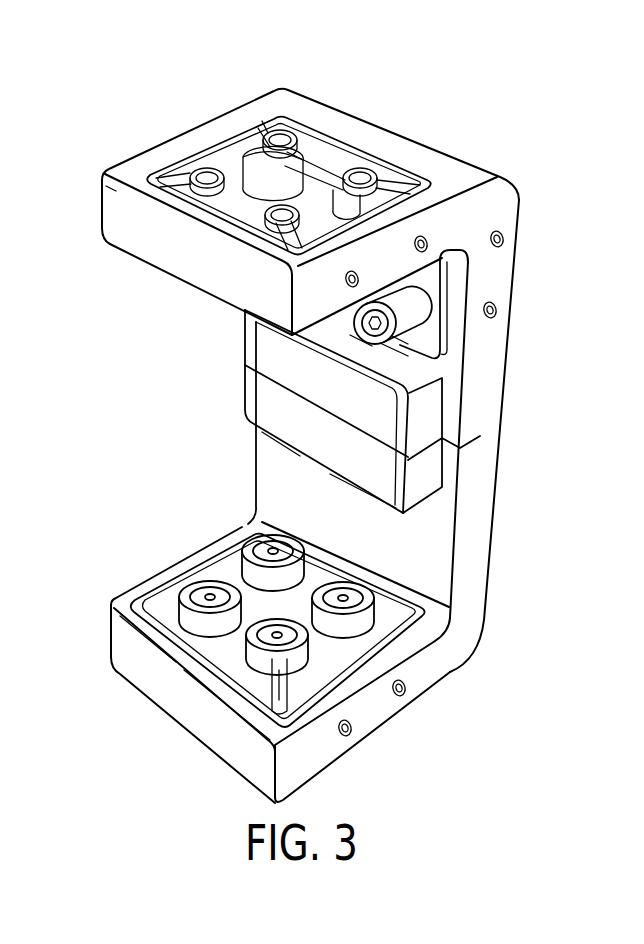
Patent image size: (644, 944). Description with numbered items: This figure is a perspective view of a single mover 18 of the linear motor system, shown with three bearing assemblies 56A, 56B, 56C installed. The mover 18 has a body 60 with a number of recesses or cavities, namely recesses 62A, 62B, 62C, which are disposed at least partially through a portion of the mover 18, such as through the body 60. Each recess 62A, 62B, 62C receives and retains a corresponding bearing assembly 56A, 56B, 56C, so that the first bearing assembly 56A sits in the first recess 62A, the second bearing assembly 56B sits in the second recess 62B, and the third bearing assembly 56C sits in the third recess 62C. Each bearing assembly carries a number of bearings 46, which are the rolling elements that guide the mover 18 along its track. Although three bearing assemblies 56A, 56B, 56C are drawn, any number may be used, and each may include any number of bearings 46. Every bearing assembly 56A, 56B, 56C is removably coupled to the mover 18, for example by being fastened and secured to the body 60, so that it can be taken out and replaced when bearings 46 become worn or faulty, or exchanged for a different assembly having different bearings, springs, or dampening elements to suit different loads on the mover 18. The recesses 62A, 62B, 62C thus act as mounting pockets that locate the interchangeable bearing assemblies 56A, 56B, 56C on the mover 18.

The mover 18 is at (392, 111).
The bearings 46 is at (182, 597).
The bearing assembly 56A is at (202, 143).
The bearing assembly 56B is at (200, 570).
The bearing assembly 56C is at (443, 337).
The body 60 is at (490, 533).
The recess 62A is at (194, 211).
The recess 62B is at (360, 680).
The recess 62C is at (450, 273).